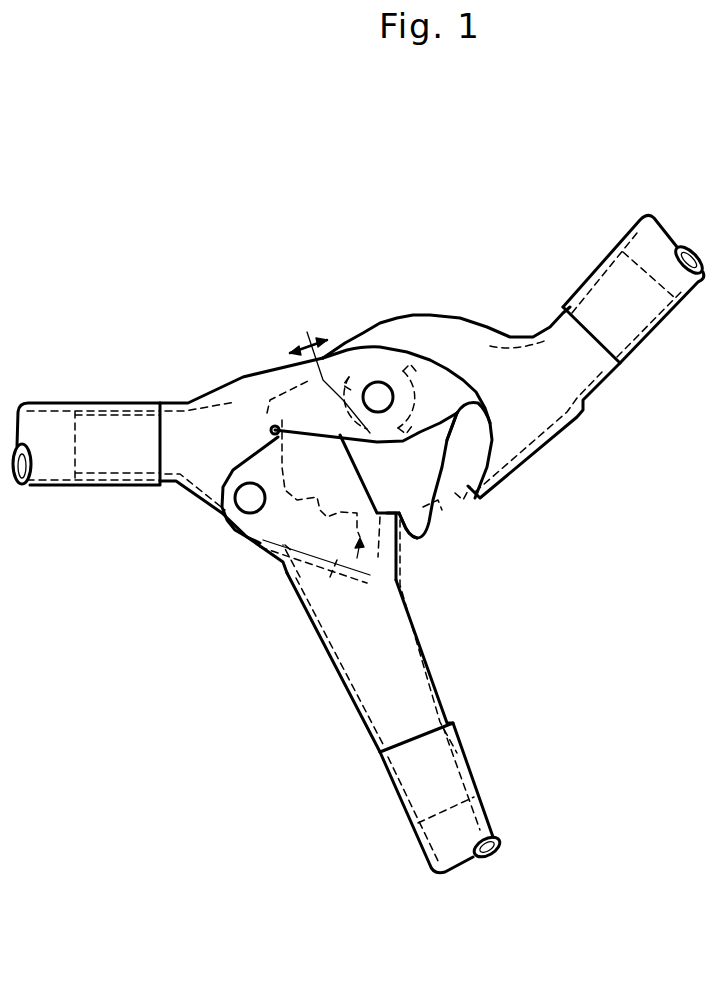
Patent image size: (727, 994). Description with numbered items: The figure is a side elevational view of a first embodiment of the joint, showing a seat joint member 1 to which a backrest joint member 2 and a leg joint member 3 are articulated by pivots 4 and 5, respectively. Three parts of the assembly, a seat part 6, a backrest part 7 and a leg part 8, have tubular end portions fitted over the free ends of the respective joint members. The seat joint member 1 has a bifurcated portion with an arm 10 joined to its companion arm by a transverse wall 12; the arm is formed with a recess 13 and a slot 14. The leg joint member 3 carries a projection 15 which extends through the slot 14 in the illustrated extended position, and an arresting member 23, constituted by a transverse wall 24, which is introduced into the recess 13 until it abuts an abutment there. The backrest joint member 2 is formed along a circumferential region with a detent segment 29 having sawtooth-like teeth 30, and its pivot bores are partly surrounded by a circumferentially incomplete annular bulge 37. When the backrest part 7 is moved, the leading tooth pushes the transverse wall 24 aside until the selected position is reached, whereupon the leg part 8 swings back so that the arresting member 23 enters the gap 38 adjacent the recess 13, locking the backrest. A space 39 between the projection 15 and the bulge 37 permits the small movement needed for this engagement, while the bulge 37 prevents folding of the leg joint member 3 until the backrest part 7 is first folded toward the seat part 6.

The seat joint member 1 is at (240, 378).
The backrest joint member 2 is at (557, 396).
The leg joint member 3 is at (397, 640).
The pivot 4 is at (383, 380).
The pivot 5 is at (245, 497).
The seat part 6 is at (53, 417).
The backrest part 7 is at (643, 247).
The leg part 8 is at (473, 818).
The arm 10 is at (425, 355).
The transverse wall 12 is at (330, 580).
The recess 13 is at (403, 550).
The slot 14 is at (272, 428).
The projection 15 is at (282, 420).
The arresting member 23 is at (398, 541).
The transverse wall 24 is at (380, 500).
The detent segment 29 is at (330, 577).
The teeth 30 is at (300, 577).
The circumferentially incomplete annular bulge 37 is at (348, 377).
The gap 38 is at (440, 527).
The space 39 is at (307, 332).